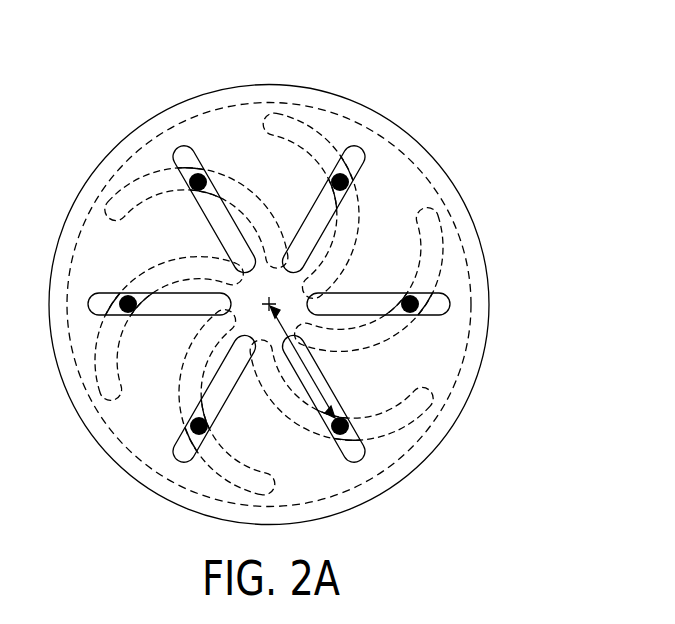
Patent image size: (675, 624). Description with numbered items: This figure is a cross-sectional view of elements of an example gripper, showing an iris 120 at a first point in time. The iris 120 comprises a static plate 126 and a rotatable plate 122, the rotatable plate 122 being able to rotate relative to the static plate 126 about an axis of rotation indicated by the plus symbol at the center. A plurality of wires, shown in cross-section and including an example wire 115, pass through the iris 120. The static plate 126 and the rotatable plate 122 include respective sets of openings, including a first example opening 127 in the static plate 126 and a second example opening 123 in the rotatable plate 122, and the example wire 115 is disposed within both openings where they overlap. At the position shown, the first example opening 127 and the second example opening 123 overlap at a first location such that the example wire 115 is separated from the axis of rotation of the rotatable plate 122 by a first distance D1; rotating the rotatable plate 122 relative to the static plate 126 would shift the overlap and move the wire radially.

The iris 120 is at (439, 87).
The rotatable plate 122 is at (182, 122).
The static plate 126 is at (355, 100).
The first example opening 127 is at (358, 460).
The second example opening 123 is at (415, 408).
The example wire 115 is at (333, 436).
The first distance D1 is at (318, 388).